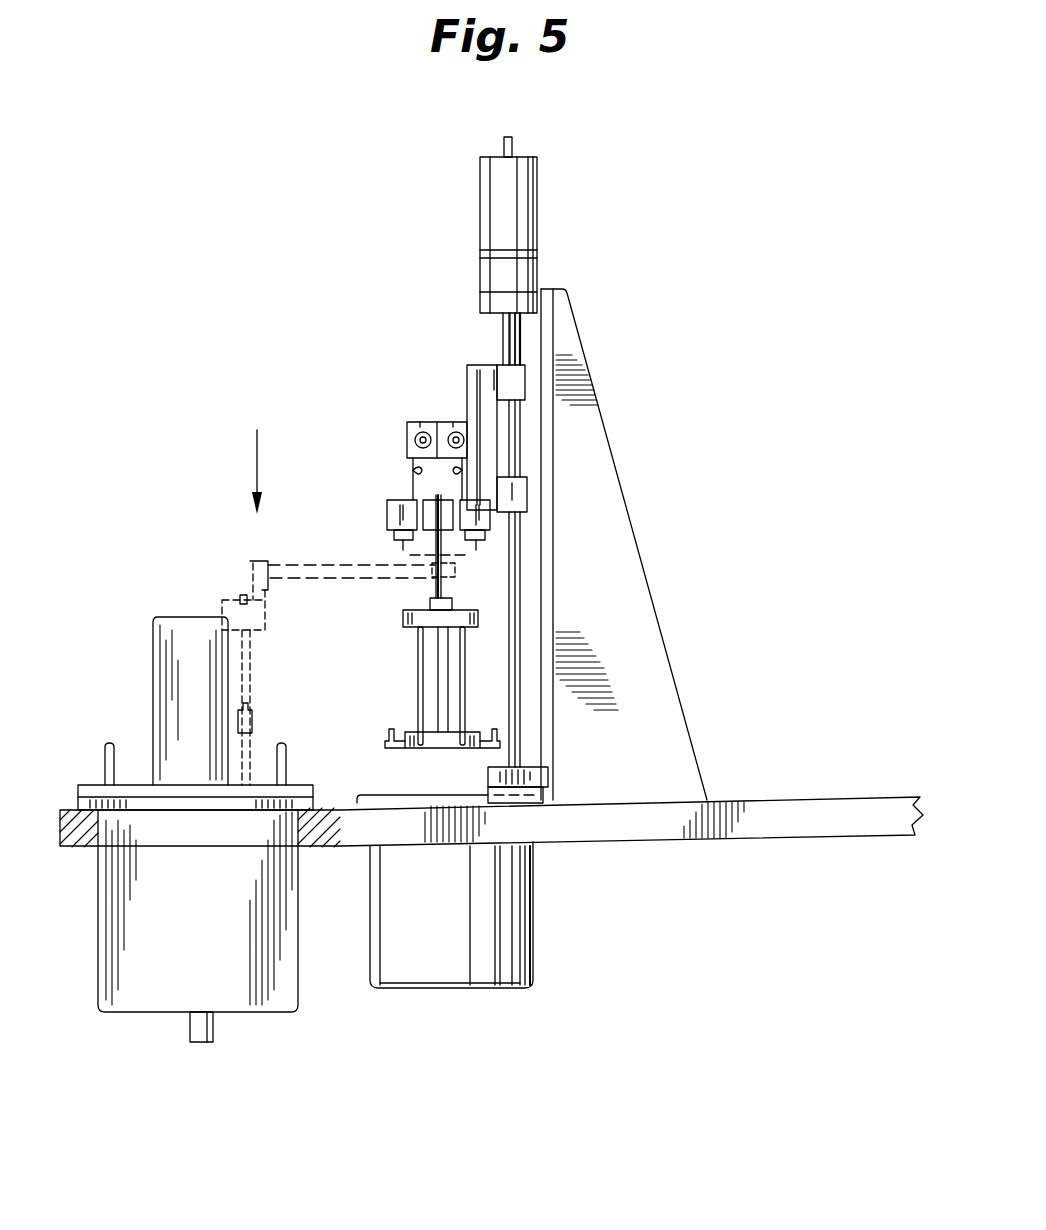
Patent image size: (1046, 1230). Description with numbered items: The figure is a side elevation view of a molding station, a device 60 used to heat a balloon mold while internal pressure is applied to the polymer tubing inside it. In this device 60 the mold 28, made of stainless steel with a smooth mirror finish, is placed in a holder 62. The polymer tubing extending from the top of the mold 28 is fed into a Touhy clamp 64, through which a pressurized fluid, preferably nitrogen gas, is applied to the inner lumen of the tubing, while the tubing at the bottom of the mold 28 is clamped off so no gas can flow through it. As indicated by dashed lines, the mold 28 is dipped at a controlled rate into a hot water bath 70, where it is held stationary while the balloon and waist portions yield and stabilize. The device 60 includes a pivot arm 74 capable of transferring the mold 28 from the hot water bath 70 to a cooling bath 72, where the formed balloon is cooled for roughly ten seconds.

The device 60 is at (350, 240).
The Touhy clamp 64 is at (389, 510).
The pivot arm 74 is at (333, 564).
The holder 62 is at (400, 615).
The mold 28 is at (418, 680).
The water bath 70 is at (255, 1000).
The cooling bath 72 is at (438, 973).